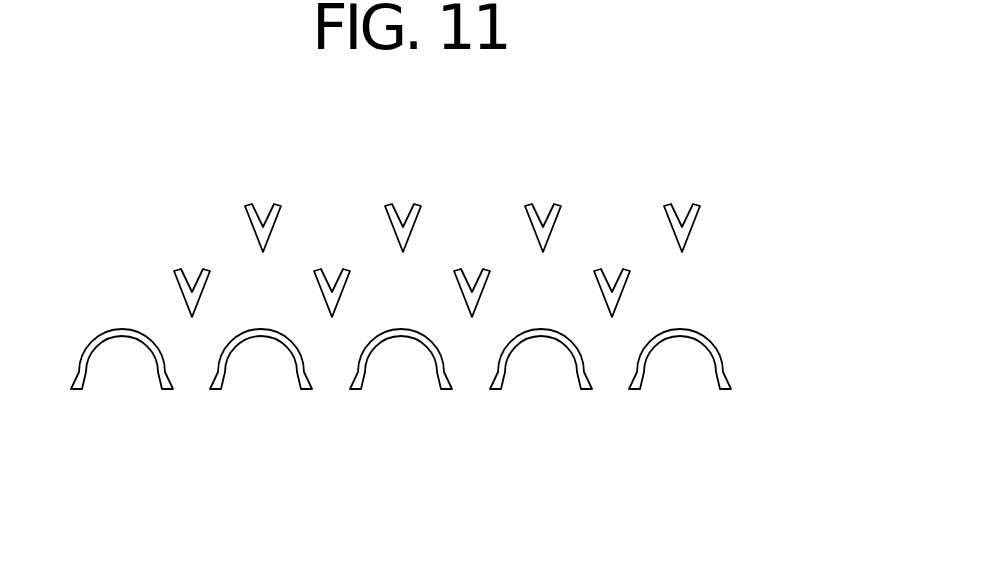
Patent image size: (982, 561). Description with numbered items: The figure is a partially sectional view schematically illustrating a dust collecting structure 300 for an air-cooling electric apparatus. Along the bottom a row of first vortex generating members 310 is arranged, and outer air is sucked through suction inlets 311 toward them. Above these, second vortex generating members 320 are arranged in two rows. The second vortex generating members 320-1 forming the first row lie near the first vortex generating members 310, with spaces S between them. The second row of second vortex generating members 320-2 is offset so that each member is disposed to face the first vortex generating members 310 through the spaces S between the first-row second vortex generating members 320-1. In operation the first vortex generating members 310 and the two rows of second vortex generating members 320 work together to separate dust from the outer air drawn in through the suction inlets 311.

The dust collecting structure 300 is at (456, 137).
The first vortex generating member 310 is at (401, 391).
The suction inlet 311 is at (477, 383).
The second vortex generating member 320 is at (514, 260).
The first row of second vortex generating members 320-1 is at (618, 298).
The second row of second vortex generating members 320-2 is at (687, 232).
The space S is at (562, 278).